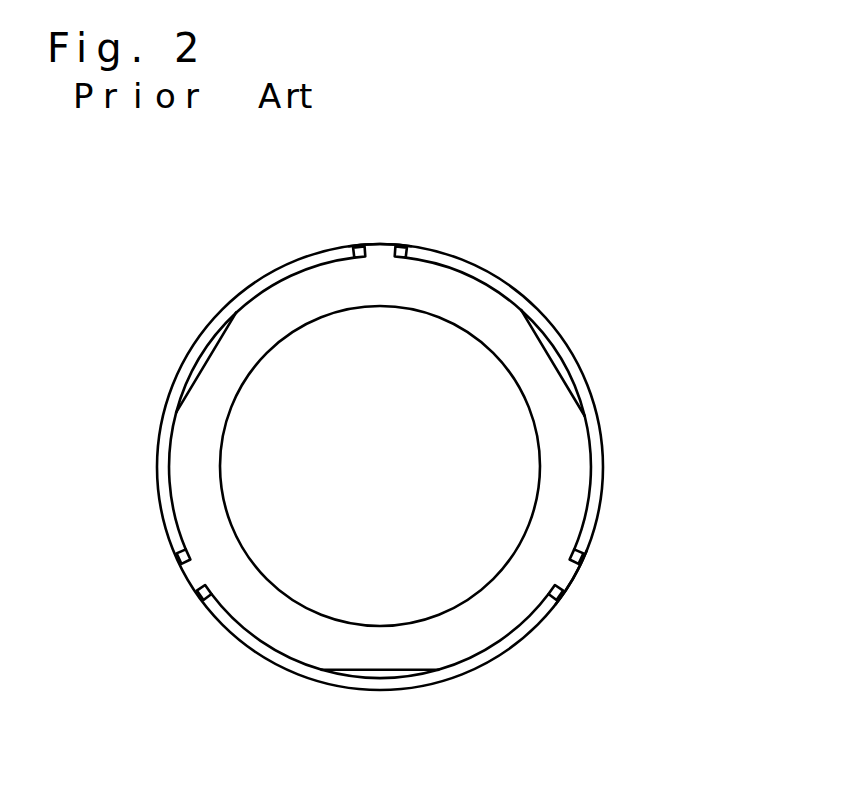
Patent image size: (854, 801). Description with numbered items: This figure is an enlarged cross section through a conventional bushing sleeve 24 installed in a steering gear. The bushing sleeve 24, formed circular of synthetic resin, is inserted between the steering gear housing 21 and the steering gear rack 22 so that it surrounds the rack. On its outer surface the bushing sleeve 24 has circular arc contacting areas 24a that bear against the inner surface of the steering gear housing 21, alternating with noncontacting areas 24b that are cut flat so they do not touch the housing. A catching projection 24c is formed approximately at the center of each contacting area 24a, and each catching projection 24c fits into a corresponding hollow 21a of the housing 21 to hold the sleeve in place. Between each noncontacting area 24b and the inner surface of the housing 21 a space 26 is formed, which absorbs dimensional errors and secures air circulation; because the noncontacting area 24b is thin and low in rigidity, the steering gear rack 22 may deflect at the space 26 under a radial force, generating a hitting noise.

The steering gear housing 21 is at (455, 257).
The hollow 21a is at (398, 247).
The steering gear rack 22 is at (513, 482).
The bushing sleeve 24 is at (402, 422).
The circular arc contacting area 24a is at (308, 274).
The noncontacting area 24b is at (222, 338).
The catching projection 24c is at (382, 238).
The space 26 is at (192, 362).